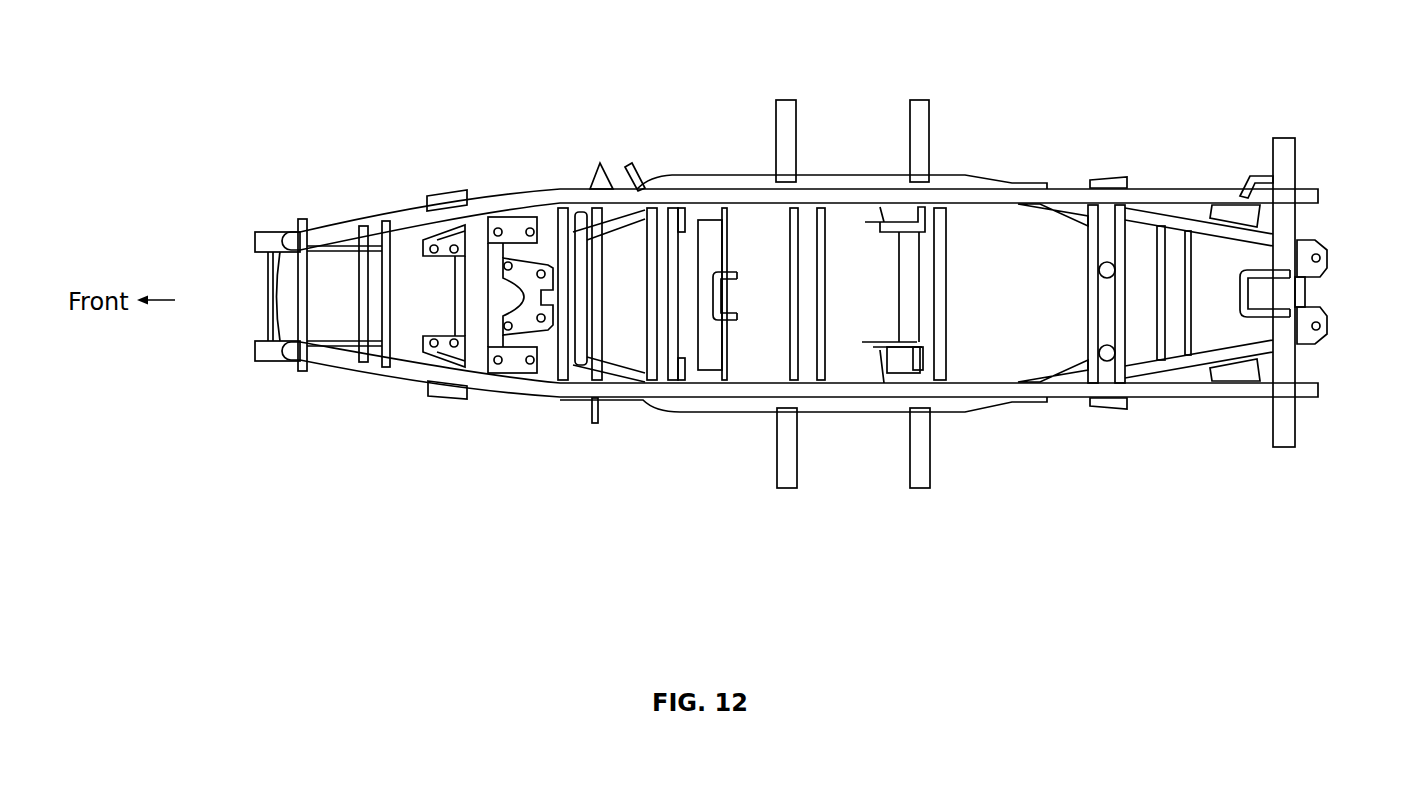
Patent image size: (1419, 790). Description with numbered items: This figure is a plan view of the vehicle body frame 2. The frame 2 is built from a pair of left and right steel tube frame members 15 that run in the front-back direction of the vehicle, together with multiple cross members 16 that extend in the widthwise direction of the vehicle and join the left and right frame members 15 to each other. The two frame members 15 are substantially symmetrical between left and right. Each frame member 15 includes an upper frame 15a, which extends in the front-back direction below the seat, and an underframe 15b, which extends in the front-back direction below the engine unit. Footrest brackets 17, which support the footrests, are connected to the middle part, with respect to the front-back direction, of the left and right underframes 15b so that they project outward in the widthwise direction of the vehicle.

The vehicle body frame 2 is at (350, 170).
The frame member 15 is at (528, 188).
The upper frame 15a is at (398, 200).
The underframe 15b is at (268, 230).
The cross member 16 is at (584, 258).
The footrest bracket 17 is at (908, 118).